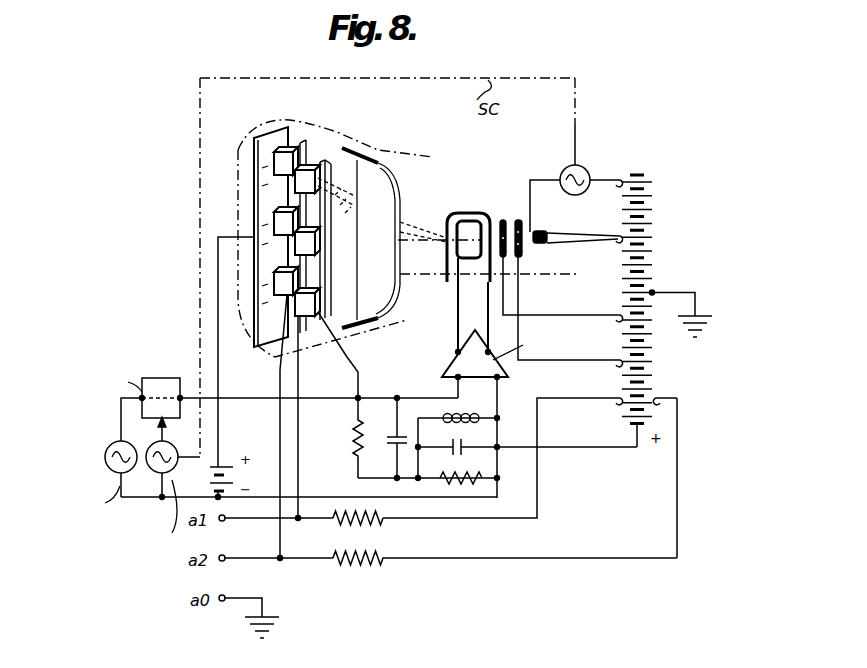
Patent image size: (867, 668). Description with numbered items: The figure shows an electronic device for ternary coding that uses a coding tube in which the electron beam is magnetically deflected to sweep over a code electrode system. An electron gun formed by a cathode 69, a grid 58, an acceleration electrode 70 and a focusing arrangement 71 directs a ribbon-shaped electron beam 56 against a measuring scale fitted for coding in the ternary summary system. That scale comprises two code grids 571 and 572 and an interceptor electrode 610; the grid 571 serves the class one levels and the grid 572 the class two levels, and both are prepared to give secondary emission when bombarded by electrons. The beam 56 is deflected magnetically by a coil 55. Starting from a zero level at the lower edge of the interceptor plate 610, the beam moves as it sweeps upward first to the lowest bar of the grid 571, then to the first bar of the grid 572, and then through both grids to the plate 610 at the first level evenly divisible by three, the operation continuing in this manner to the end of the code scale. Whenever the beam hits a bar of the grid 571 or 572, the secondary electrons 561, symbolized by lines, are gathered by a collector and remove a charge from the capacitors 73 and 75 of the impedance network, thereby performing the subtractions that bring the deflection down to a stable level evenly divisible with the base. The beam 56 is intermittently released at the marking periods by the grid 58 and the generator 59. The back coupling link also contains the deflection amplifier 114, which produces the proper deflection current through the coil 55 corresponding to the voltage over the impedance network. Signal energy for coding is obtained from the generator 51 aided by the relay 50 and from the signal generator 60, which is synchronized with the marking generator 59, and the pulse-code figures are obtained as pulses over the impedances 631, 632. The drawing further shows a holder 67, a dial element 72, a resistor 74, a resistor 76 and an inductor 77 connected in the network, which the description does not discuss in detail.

The relay 50 is at (172, 380).
The generator 51 is at (108, 462).
The deflection coil 55 is at (447, 278).
The electron beam 56 is at (447, 213).
The grid 58 is at (535, 228).
The marking generator 59 is at (572, 166).
The signal generator 60 is at (142, 498).
The reflector holder 67 is at (376, 322).
The cathode 69 is at (560, 234).
The acceleration electrode 70 is at (519, 222).
The focusing arrangement 71 is at (519, 272).
The scale dial 72 is at (240, 181).
The capacitor 73 is at (387, 445).
The resistor 74 is at (357, 442).
The capacitor 75 is at (462, 450).
The resistor 76 is at (450, 480).
The inductor 77 is at (467, 416).
The deflection amplifier 114 is at (493, 355).
The secondary electrons 561 is at (372, 172).
The code grid 571 is at (305, 322).
The code grid 572 is at (308, 160).
The interceptor electrode 610 is at (258, 135).
The impedance 631 is at (347, 524).
The impedance 632 is at (363, 566).